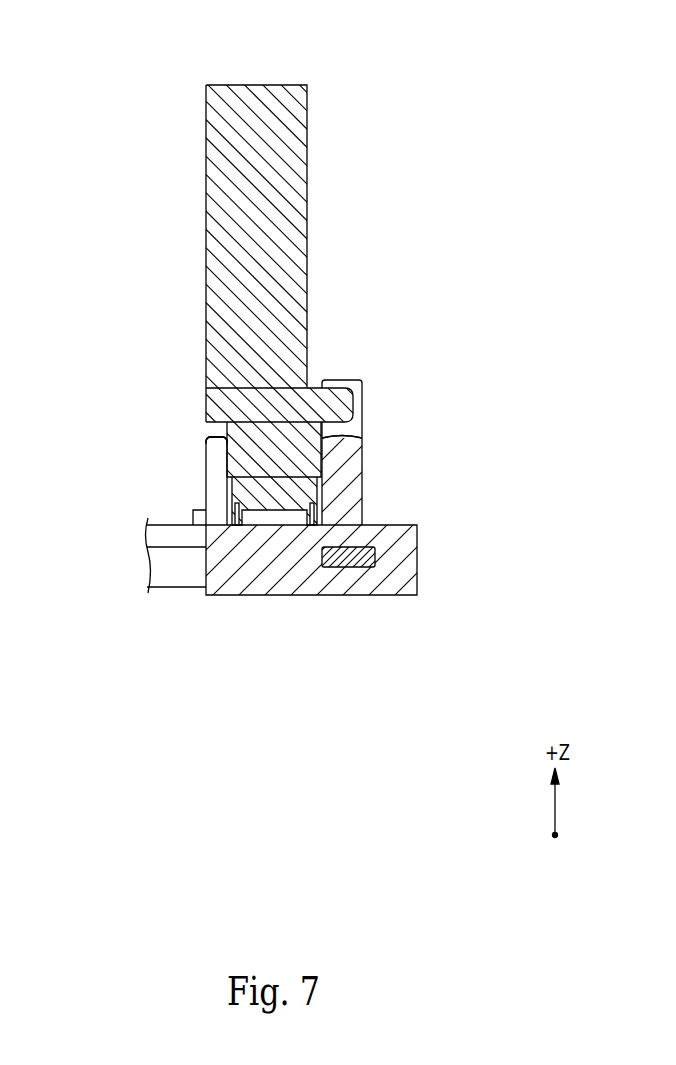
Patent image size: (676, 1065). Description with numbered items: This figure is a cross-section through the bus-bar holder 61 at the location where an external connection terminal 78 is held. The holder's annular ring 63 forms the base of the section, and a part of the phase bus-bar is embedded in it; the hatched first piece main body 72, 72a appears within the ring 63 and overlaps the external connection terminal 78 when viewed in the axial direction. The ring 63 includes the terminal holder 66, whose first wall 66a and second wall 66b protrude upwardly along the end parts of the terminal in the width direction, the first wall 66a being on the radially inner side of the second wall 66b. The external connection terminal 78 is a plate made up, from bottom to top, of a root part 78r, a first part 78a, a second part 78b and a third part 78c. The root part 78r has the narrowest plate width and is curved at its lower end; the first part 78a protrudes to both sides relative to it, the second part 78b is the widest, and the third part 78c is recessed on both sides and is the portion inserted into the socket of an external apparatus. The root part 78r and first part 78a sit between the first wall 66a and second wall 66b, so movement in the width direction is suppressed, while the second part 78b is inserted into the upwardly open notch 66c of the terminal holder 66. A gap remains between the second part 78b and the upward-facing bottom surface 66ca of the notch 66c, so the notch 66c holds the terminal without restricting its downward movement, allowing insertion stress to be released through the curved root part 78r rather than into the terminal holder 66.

The external connection terminal 78 is at (338, 532).
The third part 78c is at (218, 298).
The second part 78b is at (206, 400).
The first part 78a is at (245, 457).
The root part 78r is at (235, 488).
The terminal holder 66 is at (338, 532).
The first wall 66a is at (255, 490).
The second wall 66b is at (350, 478).
The notch 66c is at (213, 432).
The bottom surface 66ca is at (210, 437).
The bus-bar holder 61 is at (338, 532).
The ring 63 is at (417, 575).
The first piece main body 72 is at (338, 532).
The first piece main body 72a is at (365, 567).